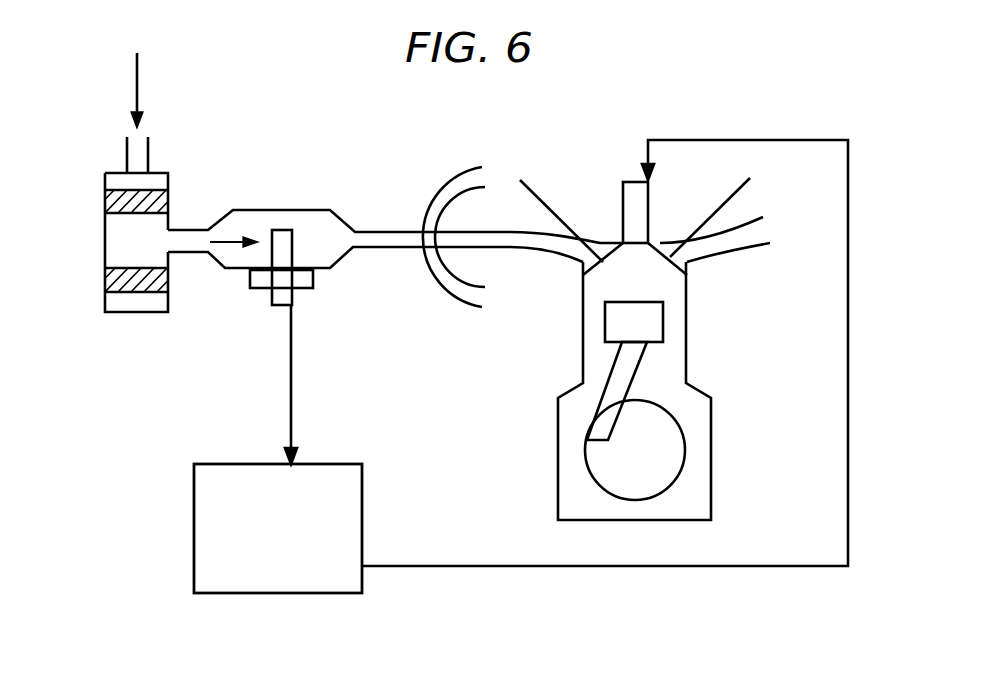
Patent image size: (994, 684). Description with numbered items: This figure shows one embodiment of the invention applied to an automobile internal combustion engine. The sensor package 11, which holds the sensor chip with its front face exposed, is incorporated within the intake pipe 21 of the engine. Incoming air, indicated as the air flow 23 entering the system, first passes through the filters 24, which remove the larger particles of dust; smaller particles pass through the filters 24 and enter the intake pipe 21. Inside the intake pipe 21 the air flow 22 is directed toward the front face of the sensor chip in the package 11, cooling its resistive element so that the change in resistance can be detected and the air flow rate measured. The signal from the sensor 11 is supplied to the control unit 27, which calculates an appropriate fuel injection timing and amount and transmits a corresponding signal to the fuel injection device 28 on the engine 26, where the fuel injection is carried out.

The package 11 is at (292, 248).
The intake pipe 21 is at (250, 210).
The air flow 22 is at (228, 242).
The intake air 23 is at (154, 113).
The filters 24 is at (105, 275).
The engine 26 is at (683, 358).
The control unit 27 is at (353, 498).
The fuel injection device 28 is at (632, 195).